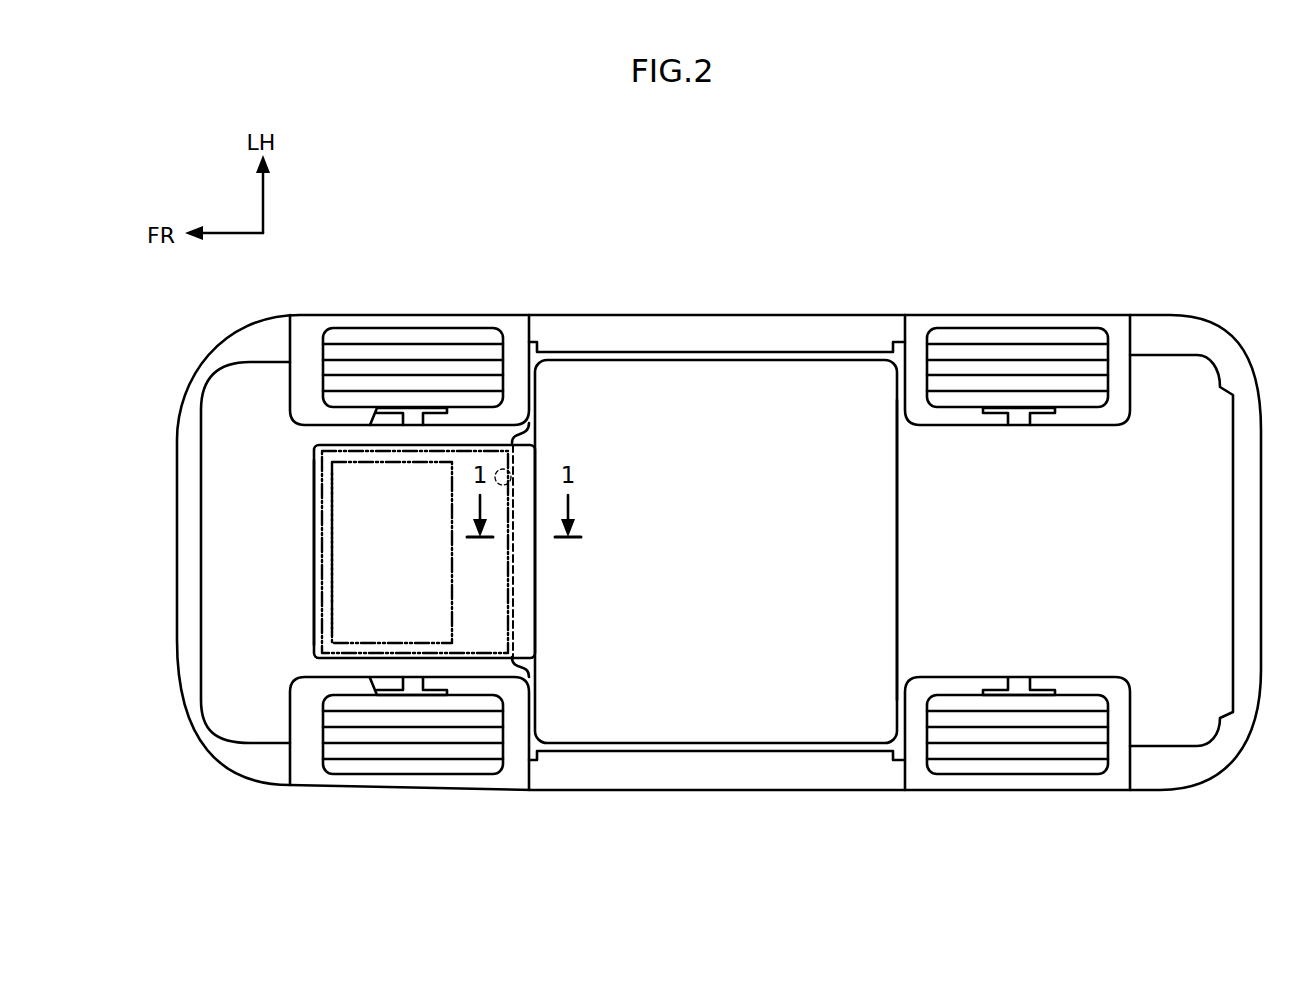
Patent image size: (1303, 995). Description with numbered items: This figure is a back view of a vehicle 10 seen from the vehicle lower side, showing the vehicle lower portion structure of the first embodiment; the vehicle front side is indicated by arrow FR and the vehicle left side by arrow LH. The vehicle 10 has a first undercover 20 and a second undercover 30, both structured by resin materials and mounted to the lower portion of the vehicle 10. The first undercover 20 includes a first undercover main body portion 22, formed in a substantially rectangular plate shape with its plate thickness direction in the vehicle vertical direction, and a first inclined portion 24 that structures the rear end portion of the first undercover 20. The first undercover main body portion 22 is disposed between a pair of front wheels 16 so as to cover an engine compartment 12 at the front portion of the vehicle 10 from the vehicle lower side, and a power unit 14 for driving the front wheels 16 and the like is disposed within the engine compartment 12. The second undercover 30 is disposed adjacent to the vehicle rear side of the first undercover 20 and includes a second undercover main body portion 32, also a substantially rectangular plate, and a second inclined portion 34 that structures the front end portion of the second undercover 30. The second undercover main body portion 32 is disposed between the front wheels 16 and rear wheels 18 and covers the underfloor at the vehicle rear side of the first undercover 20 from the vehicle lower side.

The vehicle 10 is at (823, 313).
The engine compartment 12 is at (327, 530).
The power unit 14 is at (327, 600).
The front wheels 16 is at (442, 327).
The rear wheels 18 is at (1027, 327).
The first undercover 20 is at (312, 574).
The first undercover main body portion 22 is at (314, 472).
The first inclined portion 24 is at (535, 574).
The second undercover 30 is at (898, 507).
The second undercover main body portion 32 is at (897, 575).
The second inclined portion 34 is at (510, 471).